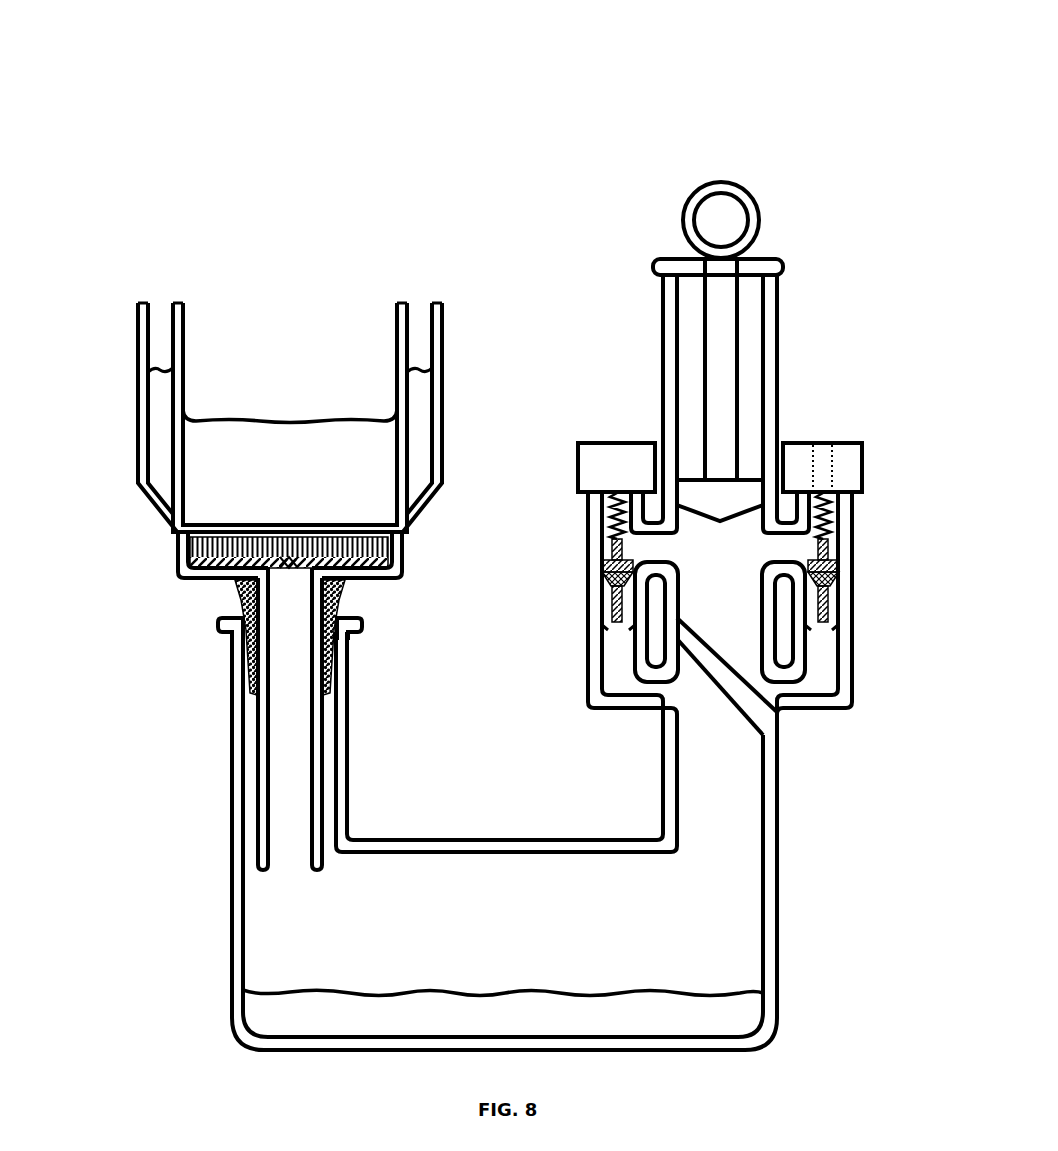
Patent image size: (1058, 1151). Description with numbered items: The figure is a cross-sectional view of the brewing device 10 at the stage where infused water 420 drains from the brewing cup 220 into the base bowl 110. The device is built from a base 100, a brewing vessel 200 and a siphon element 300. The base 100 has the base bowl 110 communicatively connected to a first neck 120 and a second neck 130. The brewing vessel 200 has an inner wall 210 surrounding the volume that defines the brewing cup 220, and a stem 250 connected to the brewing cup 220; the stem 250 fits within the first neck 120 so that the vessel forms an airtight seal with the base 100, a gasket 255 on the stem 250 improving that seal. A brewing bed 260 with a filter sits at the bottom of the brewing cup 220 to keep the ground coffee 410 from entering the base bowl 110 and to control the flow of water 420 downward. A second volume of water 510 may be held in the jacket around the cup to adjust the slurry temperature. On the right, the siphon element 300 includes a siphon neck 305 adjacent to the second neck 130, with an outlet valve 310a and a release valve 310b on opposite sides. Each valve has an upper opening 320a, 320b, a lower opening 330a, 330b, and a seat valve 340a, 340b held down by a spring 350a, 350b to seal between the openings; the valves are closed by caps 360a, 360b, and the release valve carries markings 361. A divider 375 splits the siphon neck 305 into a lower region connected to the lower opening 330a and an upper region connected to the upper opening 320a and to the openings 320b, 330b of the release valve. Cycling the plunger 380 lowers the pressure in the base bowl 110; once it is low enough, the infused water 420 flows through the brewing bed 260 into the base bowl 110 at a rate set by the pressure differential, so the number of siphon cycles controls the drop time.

The brewing device 10 is at (504, 78).
The base 100 is at (800, 957).
The base bowl 110 is at (512, 910).
The first neck 120 is at (225, 750).
The second neck 130 is at (788, 795).
The brewing vessel 200 is at (148, 520).
The inner wall 210 is at (180, 325).
The brewing cup 220 is at (345, 308).
The stem 250 is at (283, 648).
The gasket 255 is at (240, 598).
The brewing bed 260 is at (372, 578).
The siphon element 300 is at (818, 255).
The siphon neck 305 is at (730, 610).
The outlet valve 310a is at (580, 489).
The release valve 310b is at (859, 489).
The upper opening 320a is at (660, 552).
The upper opening 320b is at (775, 552).
The lower opening 330a is at (672, 692).
The lower opening 330b is at (755, 685).
The seat valve 340a is at (600, 560).
The seat valve 340b is at (840, 556).
The spring 350a is at (610, 500).
The spring 350b is at (832, 500).
The cap 360a is at (592, 467).
The cap 360b is at (848, 472).
The vent slots 361 is at (825, 455).
The divider 375 is at (770, 732).
The plunger 380 is at (680, 228).
The ground coffee 410 is at (370, 540).
The water 420 is at (360, 440).
The second volume of water 510 is at (160, 432).